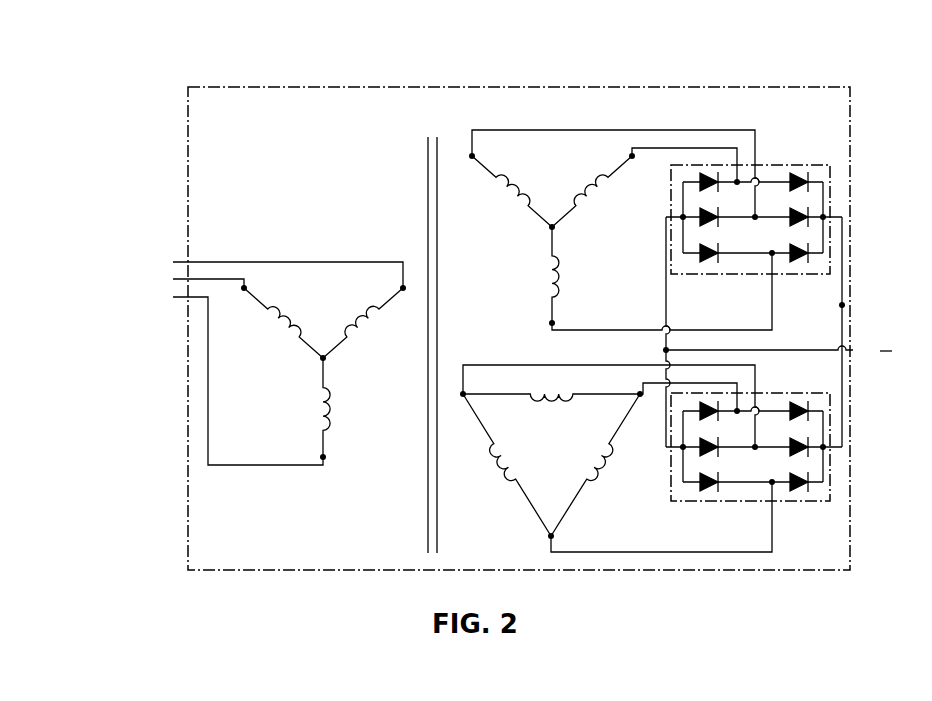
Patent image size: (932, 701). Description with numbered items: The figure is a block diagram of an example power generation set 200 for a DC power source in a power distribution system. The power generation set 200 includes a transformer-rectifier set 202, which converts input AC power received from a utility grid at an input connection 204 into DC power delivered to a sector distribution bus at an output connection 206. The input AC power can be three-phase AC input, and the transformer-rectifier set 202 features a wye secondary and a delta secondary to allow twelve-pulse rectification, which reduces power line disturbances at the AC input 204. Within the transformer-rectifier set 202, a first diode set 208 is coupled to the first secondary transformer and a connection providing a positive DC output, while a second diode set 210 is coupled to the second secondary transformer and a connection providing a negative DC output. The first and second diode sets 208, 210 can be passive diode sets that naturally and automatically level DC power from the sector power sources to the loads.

The power generation set 200 is at (71, 58).
The transformer-rectifier set 202 is at (237, 88).
The input connection 204 is at (185, 262).
The output connection 206 is at (867, 303).
The first diode set 208 is at (830, 183).
The second diode set 210 is at (830, 472).